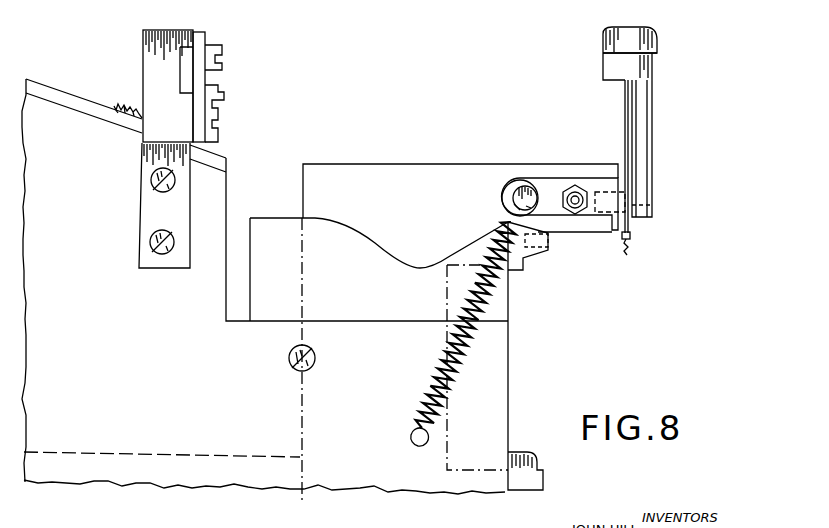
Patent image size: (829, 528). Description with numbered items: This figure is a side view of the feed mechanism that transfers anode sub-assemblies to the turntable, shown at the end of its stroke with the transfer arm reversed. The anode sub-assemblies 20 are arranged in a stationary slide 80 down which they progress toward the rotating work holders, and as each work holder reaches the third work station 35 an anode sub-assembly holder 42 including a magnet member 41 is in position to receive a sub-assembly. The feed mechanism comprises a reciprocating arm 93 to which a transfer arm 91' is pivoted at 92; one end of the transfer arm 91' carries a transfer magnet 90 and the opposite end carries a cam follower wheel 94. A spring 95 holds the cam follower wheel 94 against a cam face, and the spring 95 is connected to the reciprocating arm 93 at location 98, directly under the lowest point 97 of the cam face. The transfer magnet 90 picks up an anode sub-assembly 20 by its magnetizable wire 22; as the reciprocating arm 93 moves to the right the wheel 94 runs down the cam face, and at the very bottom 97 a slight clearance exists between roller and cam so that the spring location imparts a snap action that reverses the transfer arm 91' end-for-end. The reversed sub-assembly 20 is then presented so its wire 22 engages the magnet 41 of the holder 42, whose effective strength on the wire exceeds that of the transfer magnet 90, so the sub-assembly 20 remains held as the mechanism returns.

The stationary slide 80 is at (42, 90).
The anode sub-assembly 20 is at (117, 108).
The third work station 35 is at (270, 36).
The reciprocating arm 93 is at (355, 164).
The bottom of cam face 97 is at (413, 266).
The cam follower wheel 94 is at (510, 182).
The transfer arm 91' is at (560, 187).
The transfer magnet 90 is at (597, 193).
The pivot 92 is at (576, 208).
The magnetizable wire 22 is at (625, 120).
The anode sub-assembly holder 42 is at (652, 92).
The magnet member 41 is at (652, 205).
The spring 95 is at (493, 295).
The spring connection location 98 is at (408, 448).